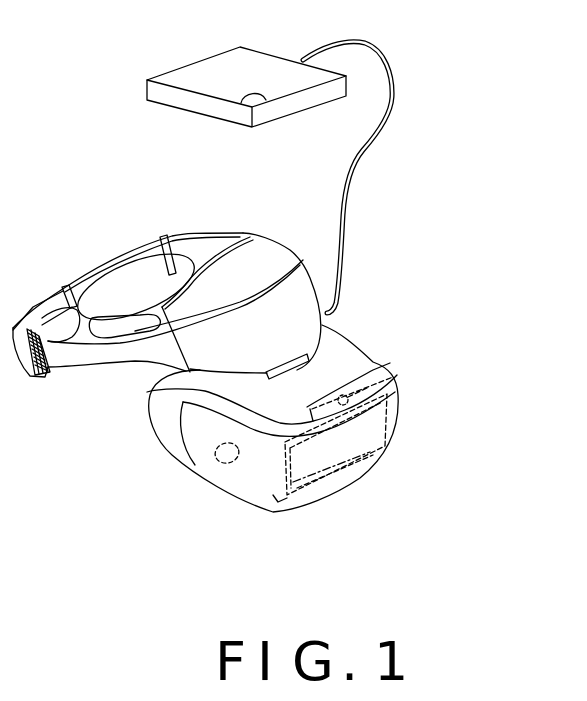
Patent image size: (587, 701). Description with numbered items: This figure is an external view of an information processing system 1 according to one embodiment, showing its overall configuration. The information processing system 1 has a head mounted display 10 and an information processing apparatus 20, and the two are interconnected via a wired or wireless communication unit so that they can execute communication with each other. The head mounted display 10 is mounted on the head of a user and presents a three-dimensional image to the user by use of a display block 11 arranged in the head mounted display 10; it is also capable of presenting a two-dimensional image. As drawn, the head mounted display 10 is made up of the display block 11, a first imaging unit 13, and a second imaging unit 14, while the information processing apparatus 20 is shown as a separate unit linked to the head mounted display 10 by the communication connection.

The information processing system 1 is at (496, 527).
The head mounted display 10 is at (270, 509).
The display block 11 is at (396, 408).
The first imaging unit 13 is at (221, 462).
The second imaging unit 14 is at (367, 388).
The information processing apparatus 20 is at (190, 63).